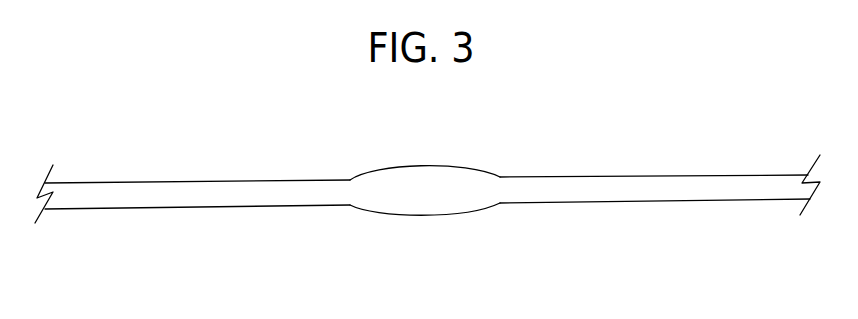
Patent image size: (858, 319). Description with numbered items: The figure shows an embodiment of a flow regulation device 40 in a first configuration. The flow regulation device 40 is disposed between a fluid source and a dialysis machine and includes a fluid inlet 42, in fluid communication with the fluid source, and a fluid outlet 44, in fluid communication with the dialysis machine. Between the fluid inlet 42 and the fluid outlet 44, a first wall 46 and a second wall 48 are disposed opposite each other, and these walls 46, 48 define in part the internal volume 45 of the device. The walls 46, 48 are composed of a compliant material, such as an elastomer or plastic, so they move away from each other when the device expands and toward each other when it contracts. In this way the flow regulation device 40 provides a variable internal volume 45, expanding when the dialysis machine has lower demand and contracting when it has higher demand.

The flow regulation device 40 is at (497, 128).
The fluid inlet 42 is at (333, 190).
The fluid outlet 44 is at (533, 190).
The internal volume 45 is at (412, 193).
The first wall 46 is at (420, 165).
The second wall 48 is at (442, 227).